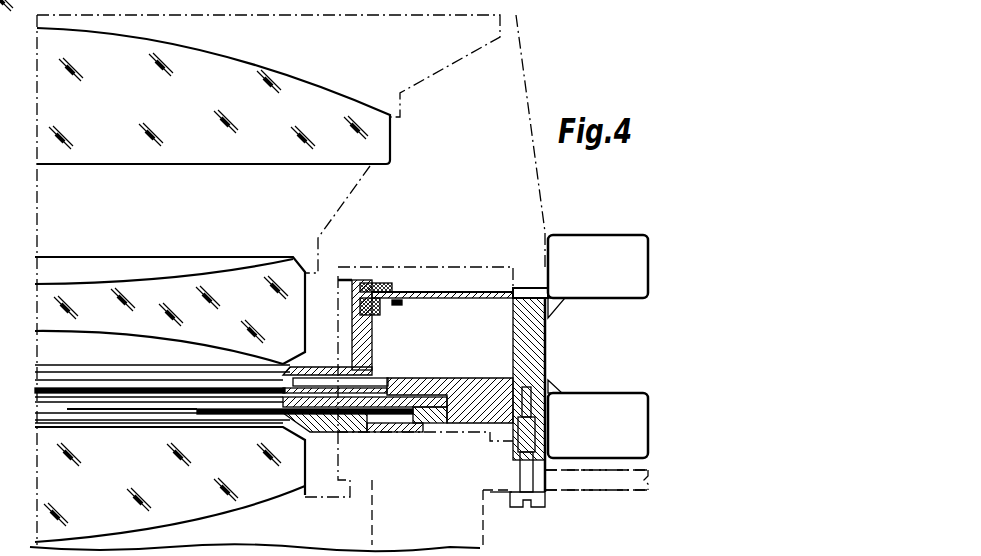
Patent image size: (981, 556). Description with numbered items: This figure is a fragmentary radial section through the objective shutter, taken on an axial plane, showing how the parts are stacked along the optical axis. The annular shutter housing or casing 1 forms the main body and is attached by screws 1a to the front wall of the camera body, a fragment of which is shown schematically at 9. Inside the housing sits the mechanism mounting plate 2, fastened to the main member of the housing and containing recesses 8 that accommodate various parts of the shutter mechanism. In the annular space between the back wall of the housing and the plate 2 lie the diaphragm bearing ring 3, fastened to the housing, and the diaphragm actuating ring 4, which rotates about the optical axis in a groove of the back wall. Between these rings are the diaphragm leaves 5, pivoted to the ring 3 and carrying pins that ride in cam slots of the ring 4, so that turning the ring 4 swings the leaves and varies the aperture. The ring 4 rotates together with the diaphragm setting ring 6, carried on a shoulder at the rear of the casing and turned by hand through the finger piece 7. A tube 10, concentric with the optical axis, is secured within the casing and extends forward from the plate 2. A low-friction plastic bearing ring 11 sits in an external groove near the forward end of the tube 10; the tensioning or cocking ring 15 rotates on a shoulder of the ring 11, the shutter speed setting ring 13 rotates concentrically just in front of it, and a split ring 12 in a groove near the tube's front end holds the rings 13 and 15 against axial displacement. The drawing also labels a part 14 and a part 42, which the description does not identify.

The shutter housing 1 is at (540, 350).
The screws 1a is at (540, 502).
The mechanism mounting plate 2 is at (462, 378).
The diaphragm bearing ring 3 is at (432, 421).
The diaphragm actuating ring 4 is at (335, 426).
The diaphragm leaves 5 is at (222, 413).
The diaphragm setting ring 6 is at (400, 429).
The finger piece 7 is at (606, 403).
The recesses 8 is at (345, 382).
The camera body front wall 9 is at (610, 487).
The tube 10 is at (372, 362).
The anti-friction bearing ring 11 is at (380, 312).
The split ring 12 is at (372, 283).
The shutter speed setting ring 13 is at (425, 292).
The motor 14 is at (615, 288).
The tensioning or cocking ring 15 is at (402, 304).
The drive shaft 42 is at (120, 395).